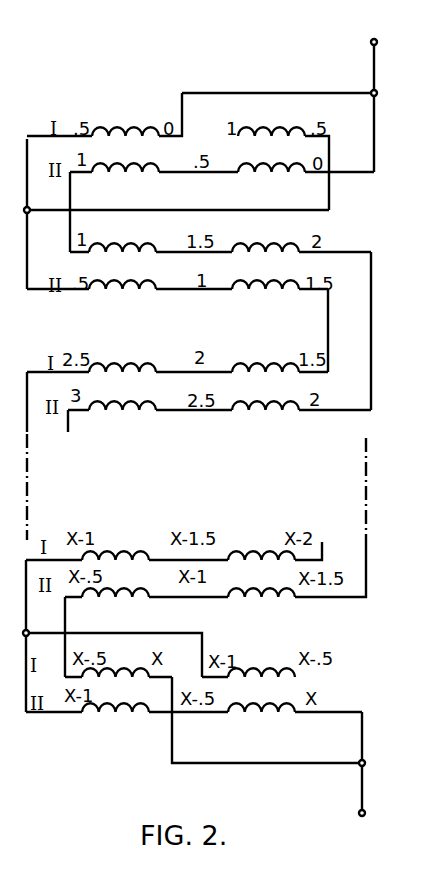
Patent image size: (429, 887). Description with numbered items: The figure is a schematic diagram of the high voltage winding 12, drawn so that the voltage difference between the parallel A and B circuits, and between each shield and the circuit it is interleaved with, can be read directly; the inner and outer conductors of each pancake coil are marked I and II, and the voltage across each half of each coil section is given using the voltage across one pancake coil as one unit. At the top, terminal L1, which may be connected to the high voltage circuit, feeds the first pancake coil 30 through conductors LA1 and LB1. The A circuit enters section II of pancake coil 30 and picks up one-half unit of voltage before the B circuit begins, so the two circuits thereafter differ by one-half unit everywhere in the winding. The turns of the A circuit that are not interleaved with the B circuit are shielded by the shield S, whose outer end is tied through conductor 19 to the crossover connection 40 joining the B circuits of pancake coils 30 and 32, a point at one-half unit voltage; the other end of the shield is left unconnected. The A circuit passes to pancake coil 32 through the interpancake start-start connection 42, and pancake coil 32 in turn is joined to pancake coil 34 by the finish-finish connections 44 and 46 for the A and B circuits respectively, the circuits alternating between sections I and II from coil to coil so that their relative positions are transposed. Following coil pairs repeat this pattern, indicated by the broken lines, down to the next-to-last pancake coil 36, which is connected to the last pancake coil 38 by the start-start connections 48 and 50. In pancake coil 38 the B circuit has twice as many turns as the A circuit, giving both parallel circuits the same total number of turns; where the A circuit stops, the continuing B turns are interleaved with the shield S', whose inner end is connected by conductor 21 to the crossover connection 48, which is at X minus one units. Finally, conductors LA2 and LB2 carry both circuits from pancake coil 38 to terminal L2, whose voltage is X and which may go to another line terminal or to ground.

The high voltage winding 12 is at (220, 84).
The pancake coil 30 is at (407, 164).
The conductor 19 is at (312, 210).
The crossover connection 40 is at (31, 233).
The interpancake start-start connection 42 is at (72, 229).
The pancake coil 32 is at (406, 287).
The interpancake finish-finish connection 46 is at (327, 323).
The interpancake finish-finish connection 44 is at (370, 334).
The pancake coil 34 is at (403, 399).
The pancake coil 36 is at (399, 587).
The interpancake start-start connection 48 is at (27, 629).
The interpancake start-start connection 50 is at (67, 631).
The conductor 21 is at (174, 634).
The pancake coil 38 is at (396, 704).
The terminal L1 is at (371, 41).
The terminal L2 is at (358, 812).
The conductor LA1 is at (380, 106).
The conductor LB1 is at (327, 93).
The conductor LA2 is at (238, 764).
The conductor LB2 is at (364, 757).
The shield S is at (276, 119).
The shield S' is at (266, 655).